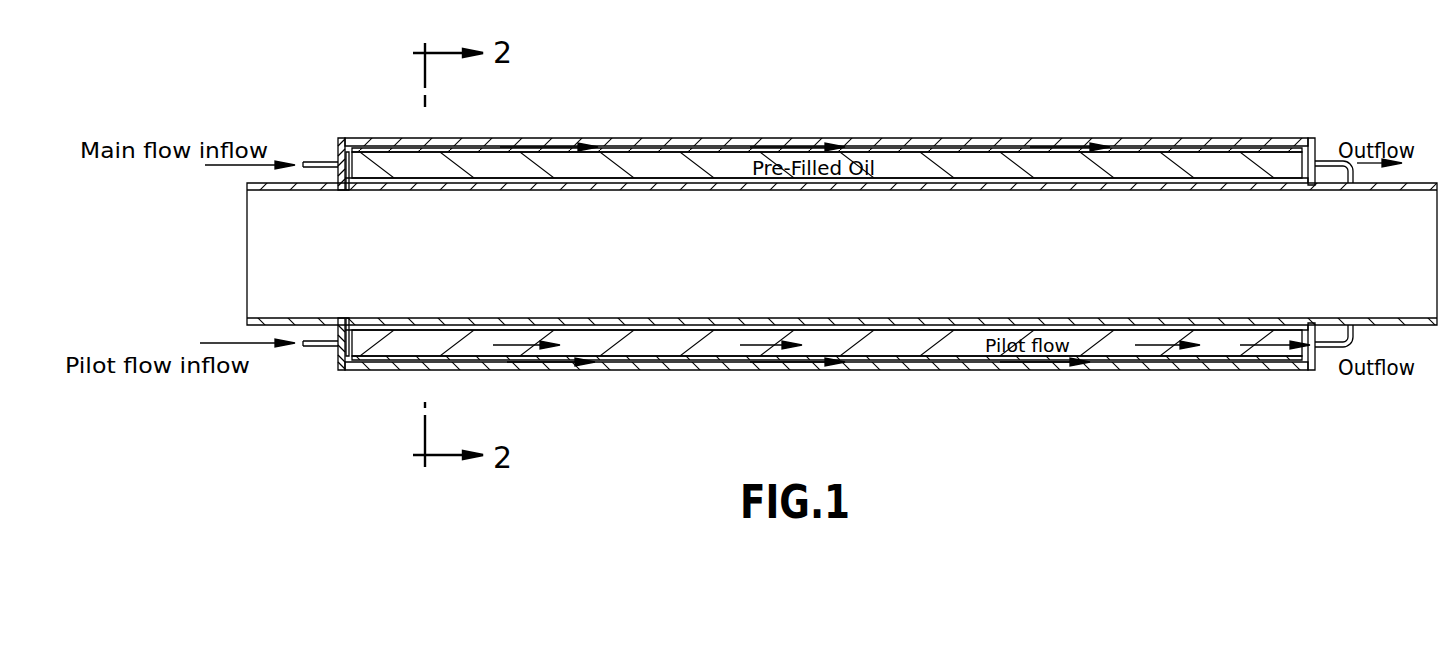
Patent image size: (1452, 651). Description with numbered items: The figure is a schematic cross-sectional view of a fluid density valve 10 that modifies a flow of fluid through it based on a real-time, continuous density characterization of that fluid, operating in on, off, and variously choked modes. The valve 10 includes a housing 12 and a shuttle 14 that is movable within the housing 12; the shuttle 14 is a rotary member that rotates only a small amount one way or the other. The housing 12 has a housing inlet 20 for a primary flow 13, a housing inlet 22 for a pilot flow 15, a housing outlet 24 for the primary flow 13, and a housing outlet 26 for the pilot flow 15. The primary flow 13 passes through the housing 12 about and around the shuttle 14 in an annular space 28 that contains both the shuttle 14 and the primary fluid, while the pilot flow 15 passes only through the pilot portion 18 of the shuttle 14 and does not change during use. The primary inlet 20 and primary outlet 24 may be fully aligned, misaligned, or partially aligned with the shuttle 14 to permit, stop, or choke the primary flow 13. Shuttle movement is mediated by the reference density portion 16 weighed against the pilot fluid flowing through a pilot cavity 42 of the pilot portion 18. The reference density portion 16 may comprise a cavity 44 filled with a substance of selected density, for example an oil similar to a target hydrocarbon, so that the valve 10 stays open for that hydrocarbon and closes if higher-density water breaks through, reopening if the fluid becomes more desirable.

The fluid density valve 10 is at (855, 85).
The housing 12 is at (667, 138).
The primary flow 13 is at (257, 167).
The shuttle 14 is at (910, 152).
The pilot flow 15 is at (262, 347).
The reference density portion 16 is at (1170, 165).
The pilot portion 18 is at (880, 347).
The housing inlet 20 is at (330, 150).
The housing inlet 22 is at (330, 348).
The housing outlet 24 is at (1322, 162).
The housing outlet 26 is at (1322, 350).
The annular space 28 is at (348, 175).
The pilot cavity 42 is at (634, 363).
The cavity 44 is at (617, 150).